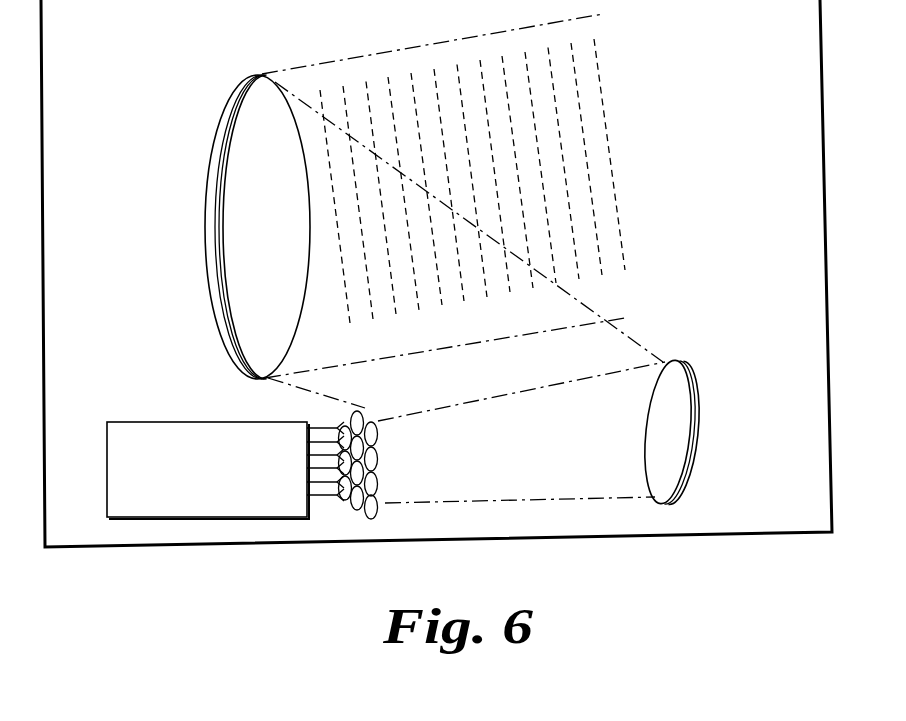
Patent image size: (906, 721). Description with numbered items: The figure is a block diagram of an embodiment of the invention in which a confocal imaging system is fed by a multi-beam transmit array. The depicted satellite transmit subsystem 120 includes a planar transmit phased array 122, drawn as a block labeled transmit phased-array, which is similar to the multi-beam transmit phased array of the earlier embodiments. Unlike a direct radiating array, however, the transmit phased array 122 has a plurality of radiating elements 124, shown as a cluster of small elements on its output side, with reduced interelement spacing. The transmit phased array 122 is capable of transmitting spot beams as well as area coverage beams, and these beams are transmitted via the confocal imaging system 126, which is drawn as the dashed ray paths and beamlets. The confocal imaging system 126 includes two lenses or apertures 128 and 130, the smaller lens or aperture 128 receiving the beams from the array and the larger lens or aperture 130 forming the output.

The satellite transmit subsystem 120 is at (655, 537).
The transmit phased array 122 is at (180, 420).
The radiating elements 124 is at (370, 403).
The confocal imaging system 126 is at (668, 224).
The lens or aperture 128 is at (698, 405).
The lens or aperture 130 is at (207, 223).